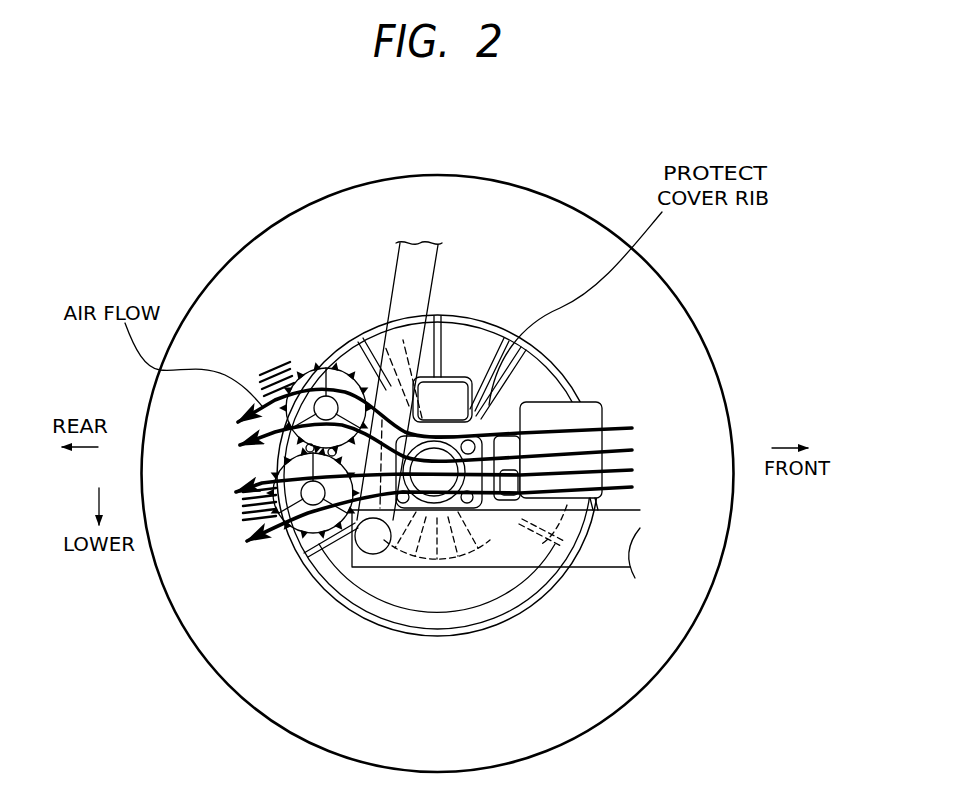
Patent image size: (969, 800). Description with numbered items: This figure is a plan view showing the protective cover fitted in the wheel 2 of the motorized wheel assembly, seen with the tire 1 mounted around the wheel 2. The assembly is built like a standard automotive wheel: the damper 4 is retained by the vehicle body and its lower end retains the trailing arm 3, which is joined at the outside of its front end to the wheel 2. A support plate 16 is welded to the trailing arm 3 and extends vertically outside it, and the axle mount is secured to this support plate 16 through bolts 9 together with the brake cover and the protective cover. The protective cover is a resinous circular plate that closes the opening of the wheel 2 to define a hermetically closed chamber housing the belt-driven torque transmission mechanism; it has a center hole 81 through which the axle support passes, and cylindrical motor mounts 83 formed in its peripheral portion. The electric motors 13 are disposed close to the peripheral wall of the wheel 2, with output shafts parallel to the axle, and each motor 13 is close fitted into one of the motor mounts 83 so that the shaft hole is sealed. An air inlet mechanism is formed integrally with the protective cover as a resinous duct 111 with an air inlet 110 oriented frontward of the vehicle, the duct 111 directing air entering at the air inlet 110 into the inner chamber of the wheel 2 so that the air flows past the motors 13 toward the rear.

The tire 1 is at (590, 235).
The wheel 2 is at (492, 318).
The trailing arm 3 is at (623, 532).
The damper 4 is at (421, 252).
The bolts 9 is at (528, 396).
The electric motors 13 is at (318, 380).
The support plate 16 is at (466, 543).
The center hole 81 is at (562, 503).
The motor mounts 83 is at (337, 530).
The air inlet 110 is at (633, 430).
The duct 111 is at (600, 402).